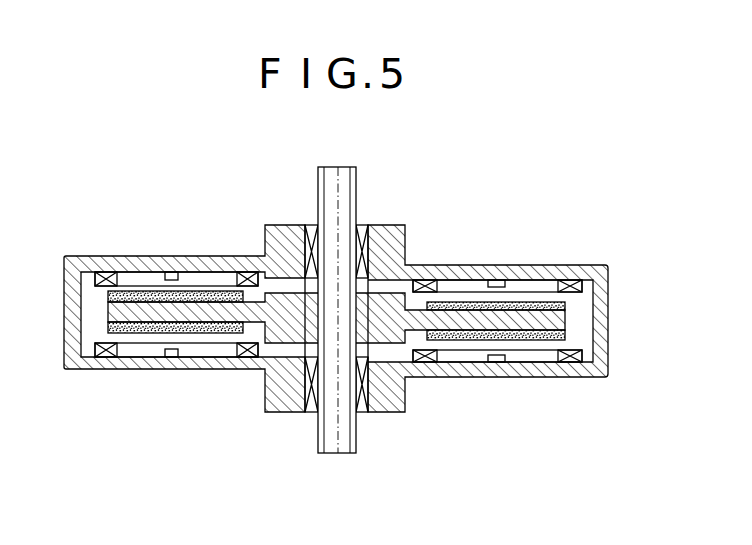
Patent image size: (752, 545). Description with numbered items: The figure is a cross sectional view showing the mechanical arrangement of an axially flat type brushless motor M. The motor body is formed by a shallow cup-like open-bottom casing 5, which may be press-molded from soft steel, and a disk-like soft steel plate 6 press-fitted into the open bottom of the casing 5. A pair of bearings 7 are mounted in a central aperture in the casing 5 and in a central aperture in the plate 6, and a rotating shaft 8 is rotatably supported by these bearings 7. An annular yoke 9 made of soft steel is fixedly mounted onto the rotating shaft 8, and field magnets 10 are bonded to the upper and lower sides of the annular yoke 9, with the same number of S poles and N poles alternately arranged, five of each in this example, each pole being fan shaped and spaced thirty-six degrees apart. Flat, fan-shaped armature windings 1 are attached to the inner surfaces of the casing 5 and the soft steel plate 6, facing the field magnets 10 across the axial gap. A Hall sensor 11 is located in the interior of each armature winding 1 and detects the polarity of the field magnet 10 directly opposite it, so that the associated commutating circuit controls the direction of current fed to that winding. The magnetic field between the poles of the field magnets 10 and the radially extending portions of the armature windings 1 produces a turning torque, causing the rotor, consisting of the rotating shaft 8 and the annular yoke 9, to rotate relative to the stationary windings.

The brushless motor M is at (469, 219).
The armature winding 1 is at (422, 266).
The casing 5 is at (609, 321).
The soft steel plate 6 is at (475, 363).
The bearing 7 is at (362, 232).
The rotating shaft 8 is at (341, 173).
The annular yoke 9 is at (513, 328).
The field magnet 10 is at (543, 304).
The Hall sensor 11 is at (495, 282).